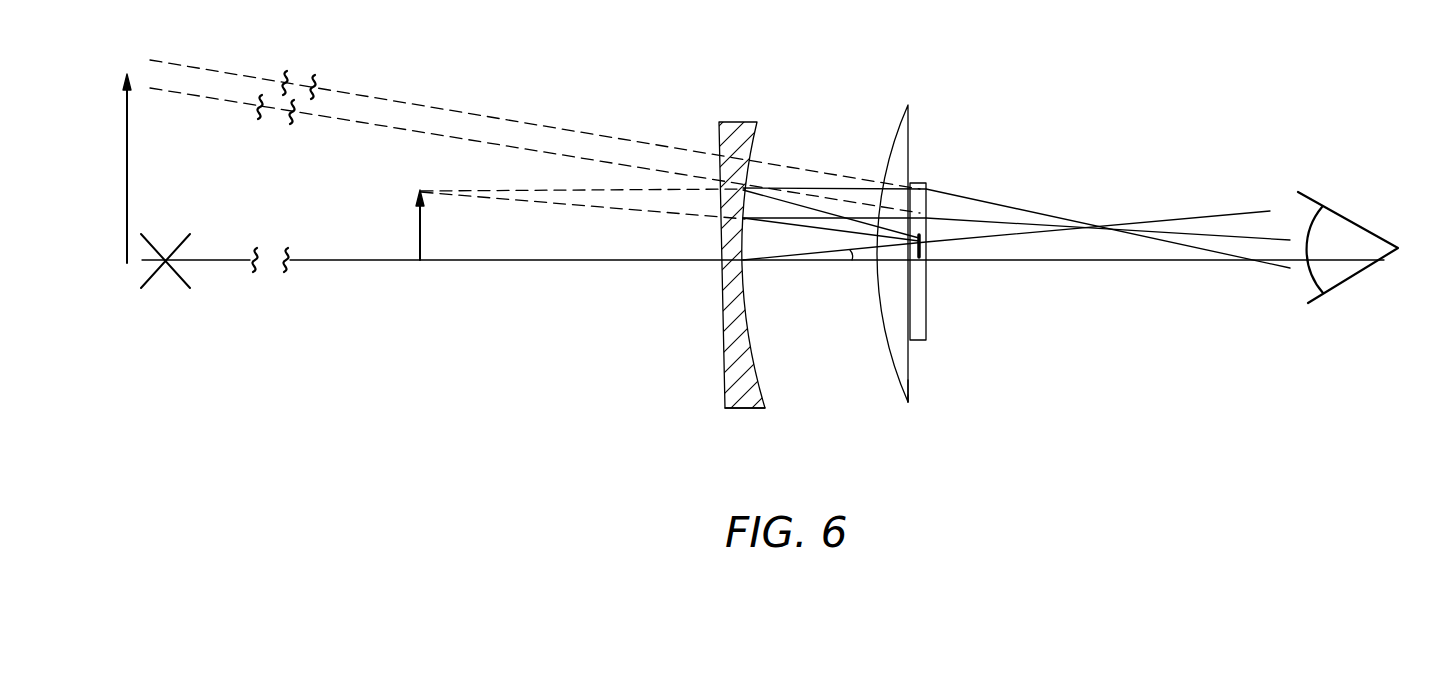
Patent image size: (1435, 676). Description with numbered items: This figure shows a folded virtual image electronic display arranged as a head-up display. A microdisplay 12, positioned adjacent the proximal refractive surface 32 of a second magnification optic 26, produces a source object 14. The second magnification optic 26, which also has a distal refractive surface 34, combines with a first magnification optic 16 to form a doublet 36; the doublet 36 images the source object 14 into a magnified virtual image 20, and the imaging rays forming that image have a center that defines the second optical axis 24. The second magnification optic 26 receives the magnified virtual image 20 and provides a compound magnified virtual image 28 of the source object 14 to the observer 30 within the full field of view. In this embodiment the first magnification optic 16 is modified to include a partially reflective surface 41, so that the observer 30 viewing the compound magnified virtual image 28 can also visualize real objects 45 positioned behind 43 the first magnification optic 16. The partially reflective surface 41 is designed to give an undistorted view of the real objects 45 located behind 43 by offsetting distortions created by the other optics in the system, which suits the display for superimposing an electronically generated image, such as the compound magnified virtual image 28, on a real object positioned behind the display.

The microdisplay 12 is at (953, 261).
The source object 14 is at (957, 271).
The first magnification optic 16 is at (737, 265).
The magnified virtual image 20 is at (553, 248).
The second optical axis 24 is at (1016, 215).
The second magnification optic 26 is at (949, 409).
The compound magnified virtual image 28 is at (489, 164).
The observer 30 is at (1362, 263).
The proximal refractive surface 32 is at (969, 110).
The distal refractive surface 34 is at (878, 230).
The doublet 36 is at (805, 426).
The partially reflective surface 41 is at (737, 265).
The behind 43 is at (763, 293).
The real objects 45 is at (156, 296).